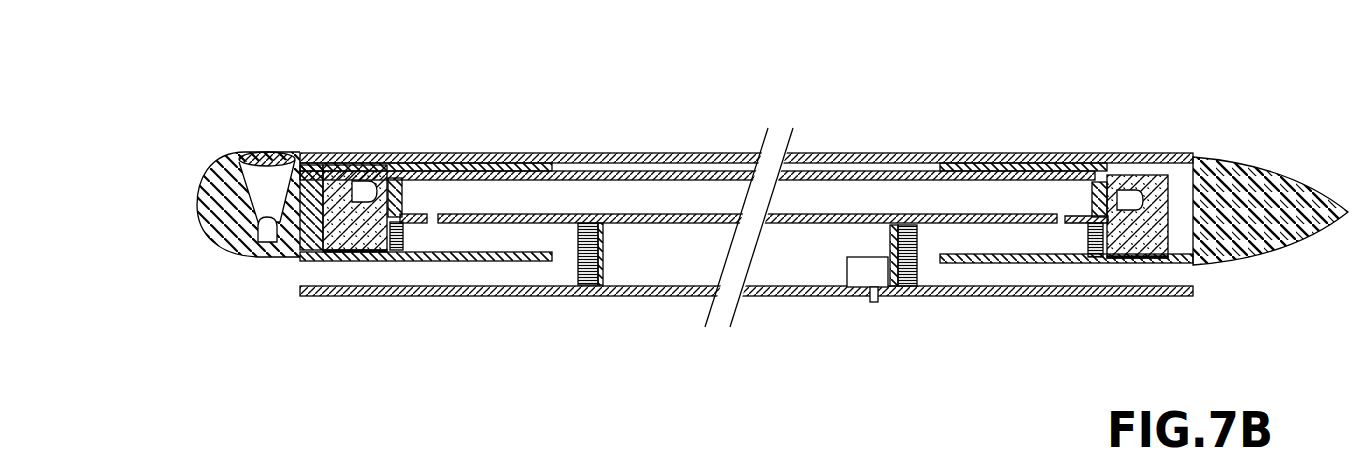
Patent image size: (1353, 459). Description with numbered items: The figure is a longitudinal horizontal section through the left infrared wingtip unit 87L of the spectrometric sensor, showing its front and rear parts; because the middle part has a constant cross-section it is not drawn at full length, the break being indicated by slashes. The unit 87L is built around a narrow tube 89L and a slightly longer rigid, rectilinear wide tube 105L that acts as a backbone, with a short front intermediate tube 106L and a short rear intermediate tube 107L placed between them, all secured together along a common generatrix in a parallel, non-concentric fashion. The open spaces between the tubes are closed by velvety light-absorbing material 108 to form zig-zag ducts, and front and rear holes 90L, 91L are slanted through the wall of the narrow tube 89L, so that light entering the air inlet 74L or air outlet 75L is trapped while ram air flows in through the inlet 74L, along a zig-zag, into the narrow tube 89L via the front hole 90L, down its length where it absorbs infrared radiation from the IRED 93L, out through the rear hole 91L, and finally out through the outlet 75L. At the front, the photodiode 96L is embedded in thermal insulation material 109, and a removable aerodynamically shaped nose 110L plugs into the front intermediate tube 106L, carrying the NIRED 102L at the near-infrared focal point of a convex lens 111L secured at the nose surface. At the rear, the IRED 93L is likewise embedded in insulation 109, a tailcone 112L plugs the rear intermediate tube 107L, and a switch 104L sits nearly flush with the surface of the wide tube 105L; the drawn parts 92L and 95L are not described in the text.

The air inlet 74L is at (298, 272).
The air outlet 75L is at (1197, 278).
The wingtip unit 87L is at (849, 148).
The narrow tube 89L is at (720, 217).
The front hole 90L is at (430, 224).
The rear hole 91L is at (1063, 226).
The right block 92L is at (1092, 192).
The IRED 93L is at (1135, 192).
The left plate 95L is at (424, 176).
The photodiode 96L is at (355, 164).
The NIRED 102L is at (258, 236).
The switch 104L is at (866, 298).
The wide tube 105L is at (637, 167).
The front intermediate tube 106L is at (510, 252).
The rear intermediate tube 107L is at (1000, 216).
The velvety light-absorbing material 108 is at (397, 252).
The thermal insulation material 109 is at (343, 253).
The nose 110L is at (202, 182).
The convex lens 111L is at (260, 150).
The tailcone 112L is at (1257, 167).